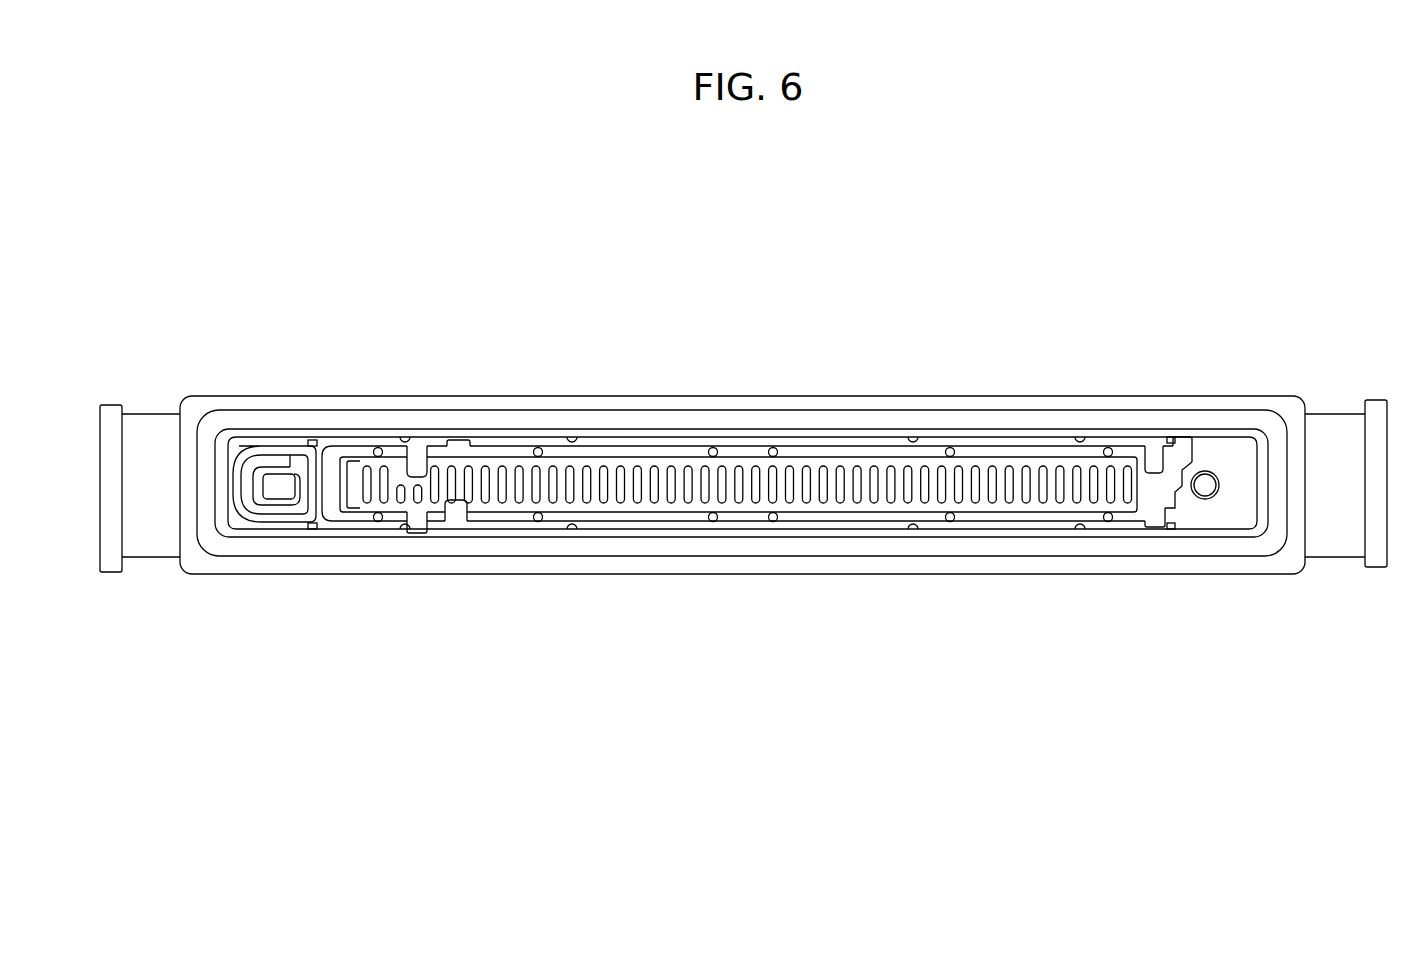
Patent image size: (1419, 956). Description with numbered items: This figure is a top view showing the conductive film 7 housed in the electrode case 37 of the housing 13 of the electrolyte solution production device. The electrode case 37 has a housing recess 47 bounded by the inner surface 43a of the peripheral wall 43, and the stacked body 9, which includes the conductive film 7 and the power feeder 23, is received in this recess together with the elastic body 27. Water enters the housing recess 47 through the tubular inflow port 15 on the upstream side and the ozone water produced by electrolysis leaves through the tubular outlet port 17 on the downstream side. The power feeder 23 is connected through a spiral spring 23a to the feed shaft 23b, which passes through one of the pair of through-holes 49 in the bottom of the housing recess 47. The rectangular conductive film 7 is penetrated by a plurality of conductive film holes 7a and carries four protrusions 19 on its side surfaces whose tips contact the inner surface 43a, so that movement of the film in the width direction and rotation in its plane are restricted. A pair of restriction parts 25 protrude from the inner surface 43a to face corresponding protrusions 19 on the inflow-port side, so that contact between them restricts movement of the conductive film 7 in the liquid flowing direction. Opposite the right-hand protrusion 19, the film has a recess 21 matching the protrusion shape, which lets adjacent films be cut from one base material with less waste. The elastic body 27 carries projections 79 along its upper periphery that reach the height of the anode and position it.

The outlet port 17 is at (150, 433).
The inflow port 15 is at (1327, 435).
The electrode case 37 is at (690, 397).
The housing 13 is at (742, 483).
The housing recess 47 is at (1226, 515).
The peripheral wall 43 is at (742, 540).
The inner surface of peripheral wall 43a is at (587, 445).
The restriction part 25 is at (1172, 438).
The through-hole 49 is at (1198, 495).
The power feeder 23 is at (298, 450).
The spiral spring 23a is at (257, 447).
The feed shaft 23b is at (278, 490).
The stacked body 9 is at (789, 472).
The conductive film 7 is at (875, 457).
The conductive film hole 7a is at (858, 485).
The protrusion 19 is at (453, 441).
The recess 21 is at (418, 472).
The projection 79 is at (712, 521).
The elastic body 27 is at (808, 446).